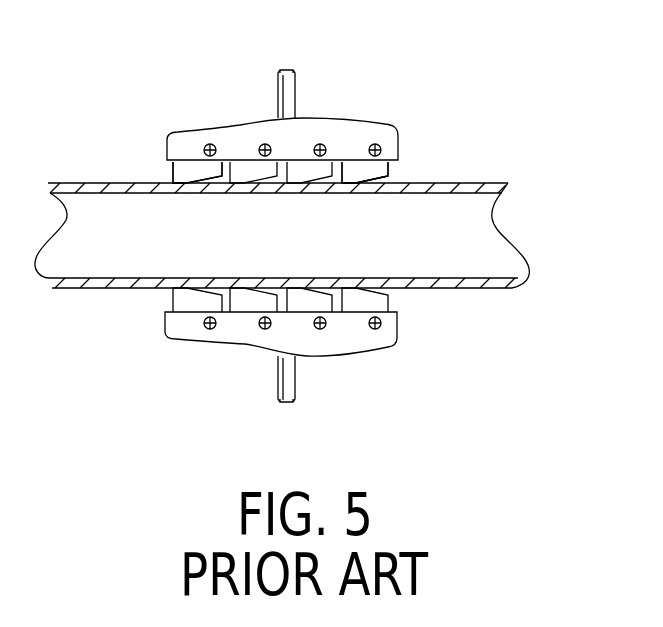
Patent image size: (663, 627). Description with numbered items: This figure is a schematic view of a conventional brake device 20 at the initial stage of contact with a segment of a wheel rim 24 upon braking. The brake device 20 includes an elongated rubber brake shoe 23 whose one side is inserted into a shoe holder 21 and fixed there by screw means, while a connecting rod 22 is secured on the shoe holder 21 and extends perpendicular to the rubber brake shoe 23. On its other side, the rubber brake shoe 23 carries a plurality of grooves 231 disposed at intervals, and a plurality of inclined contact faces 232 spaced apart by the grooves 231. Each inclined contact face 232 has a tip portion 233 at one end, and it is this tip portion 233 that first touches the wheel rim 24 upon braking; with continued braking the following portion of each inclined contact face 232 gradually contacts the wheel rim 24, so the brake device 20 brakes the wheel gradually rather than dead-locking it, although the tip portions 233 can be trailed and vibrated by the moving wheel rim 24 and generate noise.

The brake device 20 is at (309, 222).
The shoe holder 21 is at (317, 130).
The connecting rod 22 is at (286, 79).
The rubber brake shoe 23 is at (395, 166).
The grooves 231 is at (345, 180).
The inclined contact faces 232 is at (358, 166).
The tip portion 233 is at (176, 182).
The wheel rim 24 is at (471, 188).